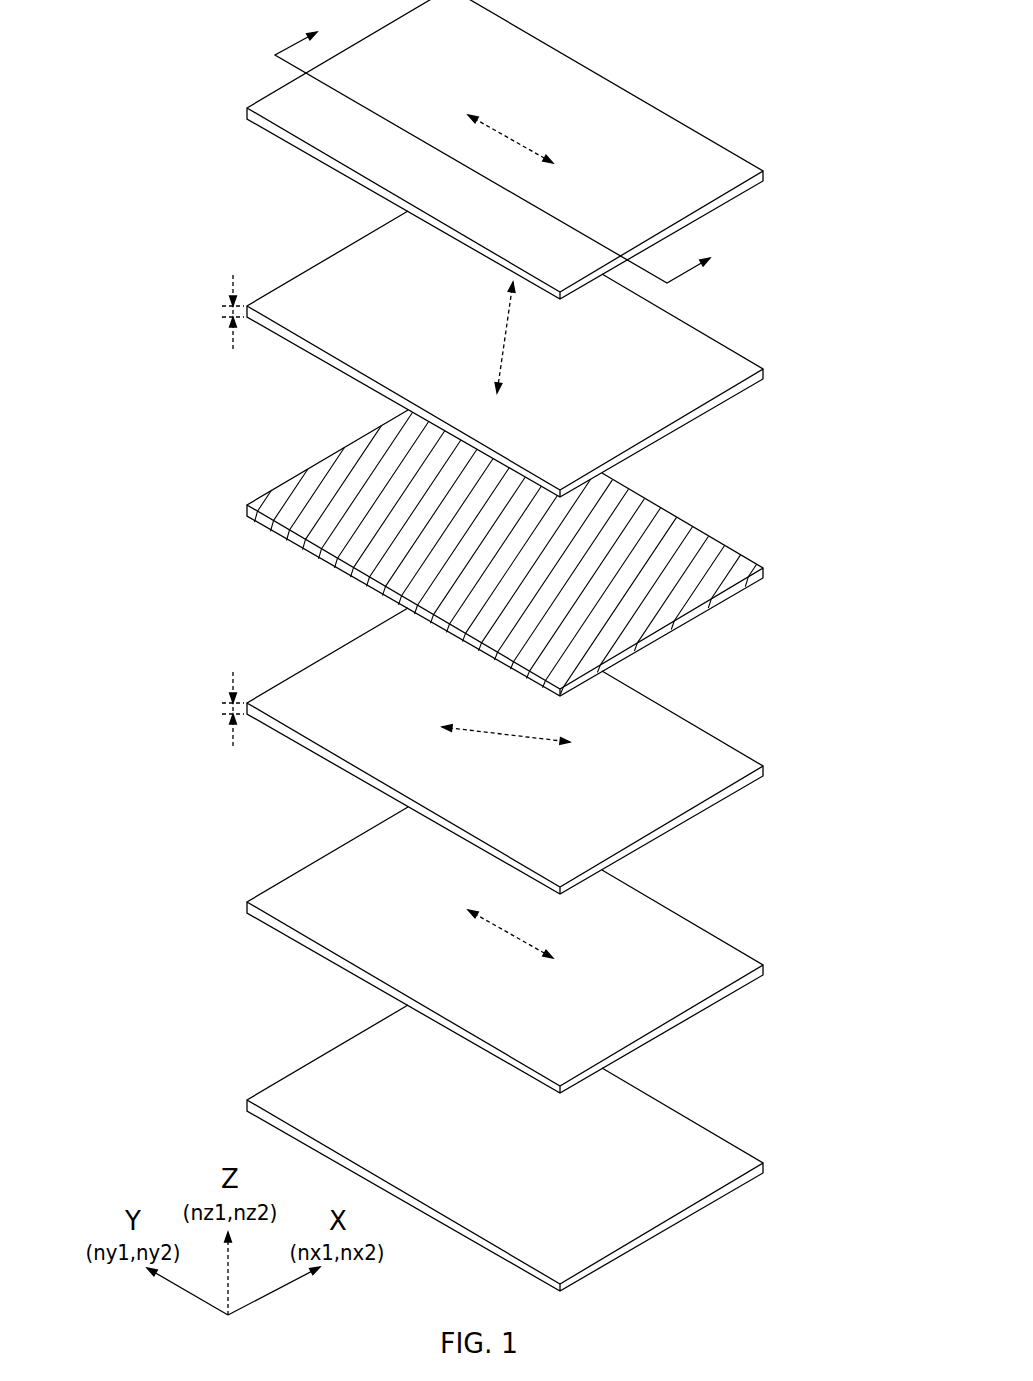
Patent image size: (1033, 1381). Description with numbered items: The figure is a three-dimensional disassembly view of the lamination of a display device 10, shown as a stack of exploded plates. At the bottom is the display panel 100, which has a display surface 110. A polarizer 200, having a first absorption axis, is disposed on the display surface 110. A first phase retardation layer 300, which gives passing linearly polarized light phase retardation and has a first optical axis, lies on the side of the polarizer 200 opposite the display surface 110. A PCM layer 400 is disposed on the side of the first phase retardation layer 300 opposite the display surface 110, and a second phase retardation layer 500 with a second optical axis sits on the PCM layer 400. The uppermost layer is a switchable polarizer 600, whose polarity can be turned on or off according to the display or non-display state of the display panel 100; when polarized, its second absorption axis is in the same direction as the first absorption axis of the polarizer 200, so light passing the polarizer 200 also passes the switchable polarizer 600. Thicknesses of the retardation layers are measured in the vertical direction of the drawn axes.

The display device 10 is at (254, 19).
The display panel 100 is at (765, 1168).
The display surface 110 is at (646, 1207).
The polarizer 200 is at (765, 970).
The first phase retardation layer 300 is at (765, 771).
The PCM layer 400 is at (765, 573).
The second phase retardation layer 500 is at (765, 374).
The switchable polarizer 600 is at (765, 176).